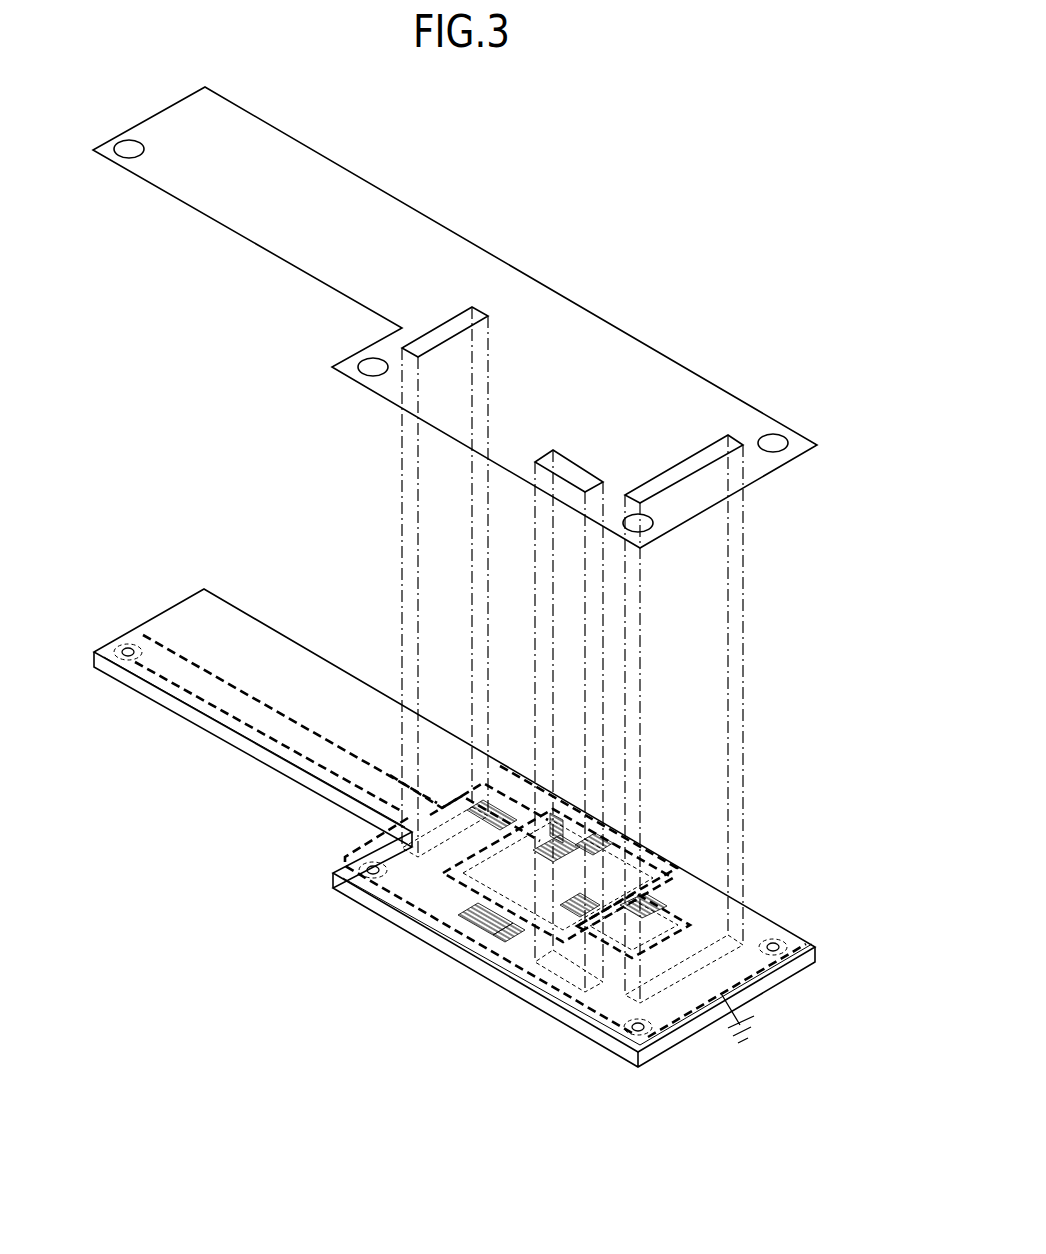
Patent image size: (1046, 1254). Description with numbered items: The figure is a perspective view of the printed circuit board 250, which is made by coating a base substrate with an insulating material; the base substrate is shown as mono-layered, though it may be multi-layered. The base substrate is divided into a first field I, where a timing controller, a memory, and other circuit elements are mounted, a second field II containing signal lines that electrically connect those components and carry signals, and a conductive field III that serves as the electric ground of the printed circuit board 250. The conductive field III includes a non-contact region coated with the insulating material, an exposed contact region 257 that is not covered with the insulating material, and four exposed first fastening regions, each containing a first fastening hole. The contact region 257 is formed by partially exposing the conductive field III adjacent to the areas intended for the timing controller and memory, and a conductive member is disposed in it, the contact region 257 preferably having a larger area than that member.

The printed circuit board 250 is at (560, 172).
The contact region 257 is at (286, 945).
The first field I is at (670, 920).
The second field II is at (662, 858).
The conductive field III is at (390, 775).